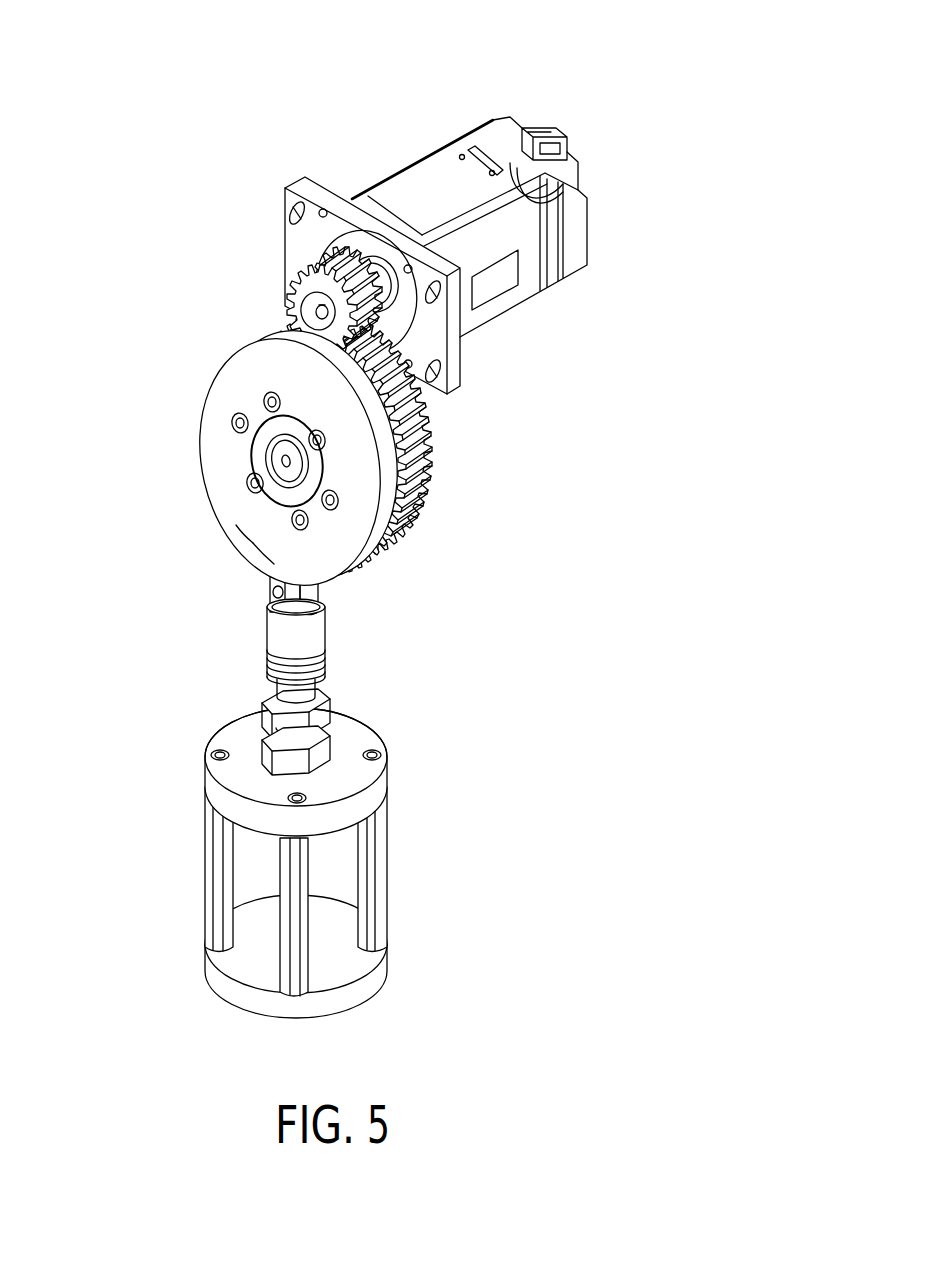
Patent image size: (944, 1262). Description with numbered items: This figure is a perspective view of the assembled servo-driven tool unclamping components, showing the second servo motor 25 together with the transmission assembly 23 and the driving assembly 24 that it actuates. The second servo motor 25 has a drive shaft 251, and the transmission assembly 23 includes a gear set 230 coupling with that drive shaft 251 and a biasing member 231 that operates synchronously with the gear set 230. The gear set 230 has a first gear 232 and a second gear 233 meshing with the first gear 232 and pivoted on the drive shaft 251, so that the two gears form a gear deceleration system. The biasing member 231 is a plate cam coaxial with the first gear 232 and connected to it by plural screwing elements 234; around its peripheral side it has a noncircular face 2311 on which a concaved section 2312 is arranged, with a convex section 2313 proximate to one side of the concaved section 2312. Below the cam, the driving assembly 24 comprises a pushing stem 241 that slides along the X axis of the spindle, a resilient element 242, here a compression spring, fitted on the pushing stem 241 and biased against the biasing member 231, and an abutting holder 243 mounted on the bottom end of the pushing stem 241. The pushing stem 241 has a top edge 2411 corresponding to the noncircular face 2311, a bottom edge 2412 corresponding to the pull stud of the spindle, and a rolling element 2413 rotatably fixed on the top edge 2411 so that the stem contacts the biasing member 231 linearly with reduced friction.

The second servo motor 25 is at (436, 209).
The drive shaft 251 is at (392, 300).
The transmission assembly 23 is at (296, 419).
The gear set 230 is at (233, 405).
The second gear 233 is at (315, 280).
The first gear 232 is at (300, 318).
The biasing member 231 is at (287, 457).
The screwing elements 234 is at (245, 474).
The noncircular face 2311 is at (397, 543).
The concaved section 2312 is at (253, 532).
The convex section 2313 is at (263, 555).
The driving assembly 24 is at (284, 810).
The top edge 2411 is at (268, 587).
The rolling element 2413 is at (318, 606).
The pushing stem 241 is at (270, 628).
The resilient element 242 is at (282, 667).
The abutting holder 243 is at (284, 879).
The bottom edge 2412 is at (318, 1017).